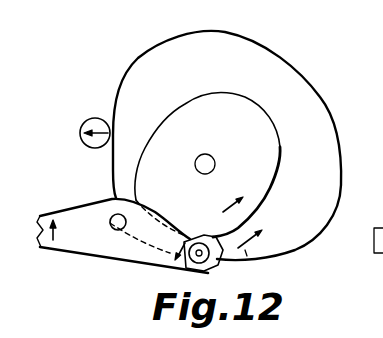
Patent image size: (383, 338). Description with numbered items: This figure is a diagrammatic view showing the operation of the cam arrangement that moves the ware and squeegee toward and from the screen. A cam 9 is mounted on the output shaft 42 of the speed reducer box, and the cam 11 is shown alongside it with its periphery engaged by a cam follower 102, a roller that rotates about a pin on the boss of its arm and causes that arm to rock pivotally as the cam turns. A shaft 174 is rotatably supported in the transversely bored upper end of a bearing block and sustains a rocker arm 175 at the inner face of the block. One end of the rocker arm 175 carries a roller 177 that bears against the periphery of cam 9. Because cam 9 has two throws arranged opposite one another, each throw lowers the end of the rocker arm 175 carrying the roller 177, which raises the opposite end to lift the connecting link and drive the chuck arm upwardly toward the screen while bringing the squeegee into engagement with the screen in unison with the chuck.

The cam 11 is at (331, 97).
The cam 9 is at (283, 146).
The output shaft 42 is at (215, 164).
The cam follower 102 is at (89, 146).
The shaft 174 is at (118, 230).
The rocker arm 175 is at (75, 243).
The roller 177 is at (222, 261).